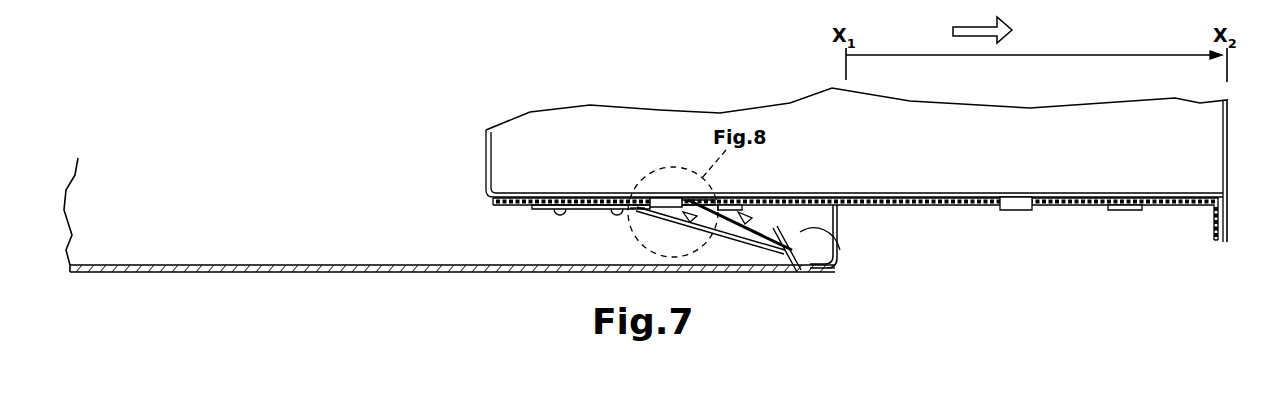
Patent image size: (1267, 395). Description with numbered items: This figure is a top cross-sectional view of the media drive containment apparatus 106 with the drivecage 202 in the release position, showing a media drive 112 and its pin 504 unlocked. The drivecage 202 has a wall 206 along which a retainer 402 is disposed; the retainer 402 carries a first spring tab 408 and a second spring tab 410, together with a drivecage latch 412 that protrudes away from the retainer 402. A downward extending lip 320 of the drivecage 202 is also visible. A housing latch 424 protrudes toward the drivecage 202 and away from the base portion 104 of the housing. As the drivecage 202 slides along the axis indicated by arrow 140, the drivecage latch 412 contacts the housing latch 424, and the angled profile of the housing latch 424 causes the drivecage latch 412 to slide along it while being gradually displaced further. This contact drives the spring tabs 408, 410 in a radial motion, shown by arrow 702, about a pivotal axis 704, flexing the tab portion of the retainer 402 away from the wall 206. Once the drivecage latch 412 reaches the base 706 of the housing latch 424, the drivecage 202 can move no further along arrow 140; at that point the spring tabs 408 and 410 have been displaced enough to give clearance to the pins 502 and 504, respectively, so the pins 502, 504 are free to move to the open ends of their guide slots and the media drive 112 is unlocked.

The base portion 104 is at (838, 243).
The media drive containment apparatus 106 is at (489, 70).
The media drive 112 is at (580, 120).
The arrow 140 is at (958, 24).
The drivecage 202 is at (1140, 263).
The wall 206 is at (500, 206).
The downward extending lip 320 is at (1221, 220).
The retainer 402 is at (695, 212).
The spring tab 408 is at (688, 207).
The spring tab 410 is at (748, 215).
The drivecage latch 412 is at (772, 255).
The housing latch 424 is at (836, 270).
The pin 502 is at (660, 201).
The pin 504 is at (733, 243).
The arrow 702 is at (806, 214).
The pivotal axis 704 is at (640, 210).
The base of housing latch 706 is at (795, 275).